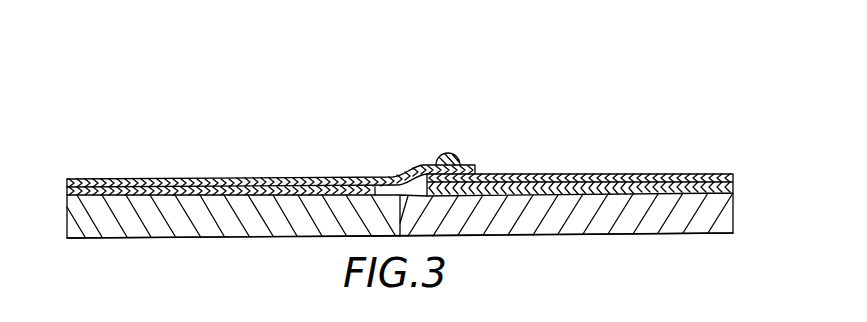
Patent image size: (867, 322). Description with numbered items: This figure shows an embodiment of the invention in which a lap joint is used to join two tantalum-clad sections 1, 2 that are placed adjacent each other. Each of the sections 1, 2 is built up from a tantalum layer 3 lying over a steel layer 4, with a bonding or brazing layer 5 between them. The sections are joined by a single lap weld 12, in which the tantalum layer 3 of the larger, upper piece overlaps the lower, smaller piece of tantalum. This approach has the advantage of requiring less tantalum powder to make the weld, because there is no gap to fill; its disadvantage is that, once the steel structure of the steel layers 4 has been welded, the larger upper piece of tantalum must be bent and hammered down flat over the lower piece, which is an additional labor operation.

The section 1 is at (208, 144).
The section 2 is at (595, 141).
The tantalum layer 3 is at (96, 172).
The steel layer 4 is at (143, 247).
The bonding or brazing layer 5 is at (56, 197).
The single lap weld 12 is at (465, 147).